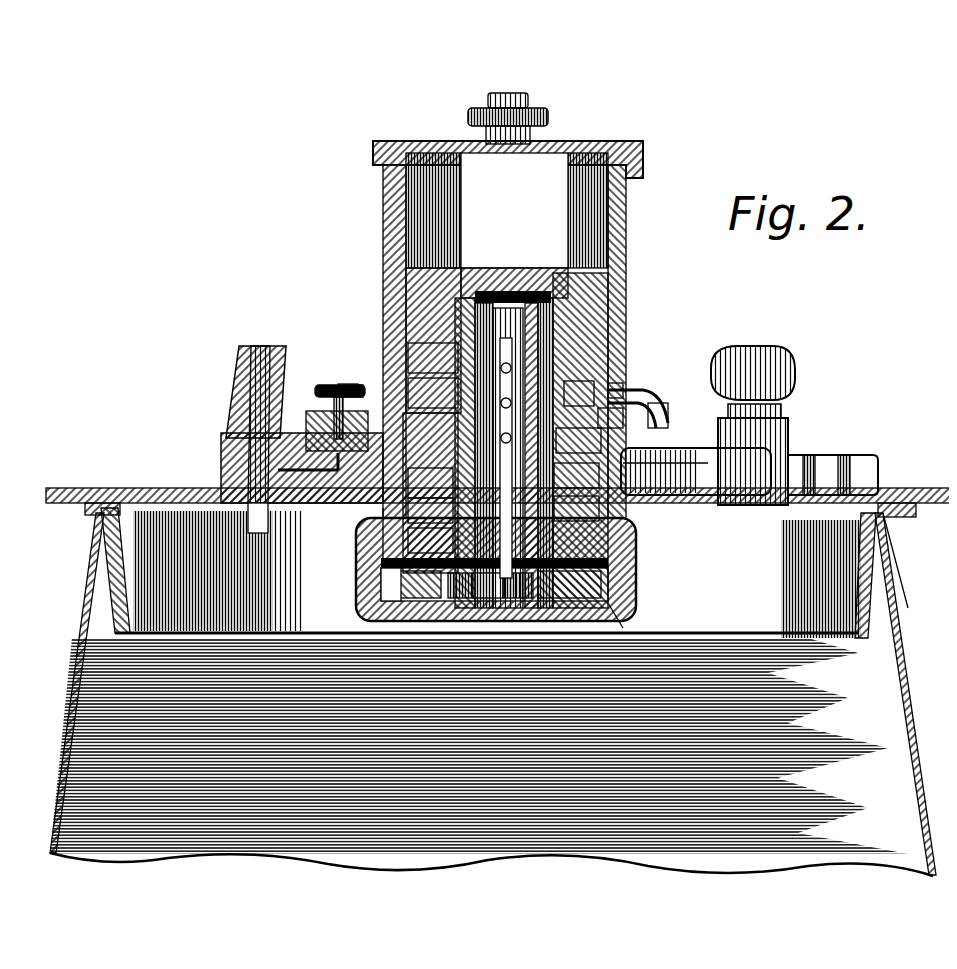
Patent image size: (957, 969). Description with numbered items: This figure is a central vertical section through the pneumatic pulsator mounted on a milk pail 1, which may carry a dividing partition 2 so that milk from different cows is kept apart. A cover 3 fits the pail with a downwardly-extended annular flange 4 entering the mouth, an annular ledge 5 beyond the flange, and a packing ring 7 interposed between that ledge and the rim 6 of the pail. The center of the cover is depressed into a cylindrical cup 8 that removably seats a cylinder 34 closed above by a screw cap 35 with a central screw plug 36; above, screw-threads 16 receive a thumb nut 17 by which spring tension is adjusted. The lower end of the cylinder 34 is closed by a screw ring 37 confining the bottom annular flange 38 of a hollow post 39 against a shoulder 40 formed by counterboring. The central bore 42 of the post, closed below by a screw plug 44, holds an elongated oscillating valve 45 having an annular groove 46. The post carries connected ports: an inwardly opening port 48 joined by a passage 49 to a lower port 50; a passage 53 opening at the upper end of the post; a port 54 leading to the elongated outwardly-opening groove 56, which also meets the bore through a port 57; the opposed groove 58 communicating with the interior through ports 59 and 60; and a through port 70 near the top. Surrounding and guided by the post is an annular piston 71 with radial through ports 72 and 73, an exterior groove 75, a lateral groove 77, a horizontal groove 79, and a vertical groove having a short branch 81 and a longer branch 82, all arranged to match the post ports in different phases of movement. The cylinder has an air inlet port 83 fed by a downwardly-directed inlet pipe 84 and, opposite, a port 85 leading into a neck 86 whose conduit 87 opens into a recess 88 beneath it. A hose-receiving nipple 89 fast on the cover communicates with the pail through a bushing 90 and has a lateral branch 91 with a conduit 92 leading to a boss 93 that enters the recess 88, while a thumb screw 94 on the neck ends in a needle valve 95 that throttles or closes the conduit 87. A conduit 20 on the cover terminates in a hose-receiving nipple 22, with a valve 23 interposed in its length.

The milk pail 1 is at (902, 695).
The dividing partition 2 is at (95, 703).
The cover 3 is at (872, 490).
The annular flange 4 is at (856, 633).
The annular ledge 5 is at (60, 497).
The rim 6 is at (885, 555).
The packing ring 7 is at (895, 522).
The cylindrical cup 8 is at (628, 585).
The screw-threads 16 is at (468, 113).
The thumb nut 17 is at (482, 100).
The conduit 20 is at (712, 480).
The hose-receiving nipple 22 is at (835, 450).
The valve 23 is at (772, 372).
The cylinder 34 is at (612, 265).
The screw cap 35 is at (572, 145).
The screw plug 36 is at (525, 105).
The screw ring 37 is at (605, 610).
The bottom annular flange 38 is at (412, 560).
The hollow post 39 is at (460, 570).
The shoulder 40 is at (380, 575).
The central bore 42 is at (612, 225).
The screw plug 44 is at (500, 575).
The oscillating valve 45 is at (486, 290).
The annular groove 46 is at (600, 300).
The port 48 is at (576, 475).
The passage 49 is at (625, 525).
The port 50 is at (576, 508).
The passage 53 is at (430, 493).
The port 54 is at (430, 510).
The elongated outwardly-opening port 56 is at (433, 356).
The port 57 is at (433, 340).
The outwardly-opening port 58 is at (560, 320).
The port 59 is at (555, 345).
The port 60 is at (578, 440).
The through port 70 is at (430, 483).
The annular piston 71 is at (410, 270).
The radial through port 72 is at (433, 393).
The radial through port 73 is at (579, 393).
The exterior groove 75 is at (340, 377).
The lateral groove 77 is at (430, 539).
The horizontal groove 79 is at (600, 410).
The short branch 81 is at (640, 384).
The longer branch 82 is at (712, 430).
The air inlet port 83 is at (605, 380).
The inlet pipe 84 is at (652, 400).
The port 85 is at (340, 377).
The neck 86 is at (305, 405).
The conduit 87 is at (326, 377).
The recess 88 is at (250, 410).
The hose-receiving nipple 89 is at (216, 435).
The bushing 90 is at (250, 500).
The lateral branch 91 is at (345, 470).
The conduit 92 is at (300, 465).
The boss 93 is at (375, 520).
The thumb screw 94 is at (340, 375).
The needle valve 95 is at (245, 380).